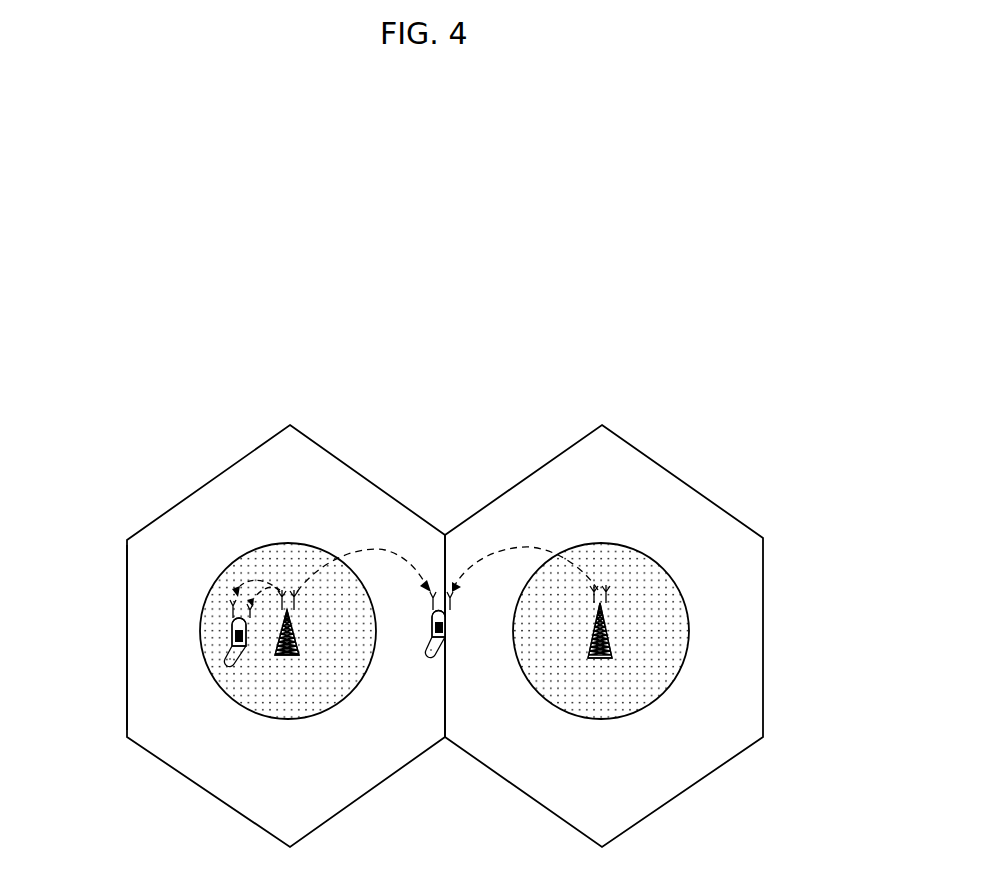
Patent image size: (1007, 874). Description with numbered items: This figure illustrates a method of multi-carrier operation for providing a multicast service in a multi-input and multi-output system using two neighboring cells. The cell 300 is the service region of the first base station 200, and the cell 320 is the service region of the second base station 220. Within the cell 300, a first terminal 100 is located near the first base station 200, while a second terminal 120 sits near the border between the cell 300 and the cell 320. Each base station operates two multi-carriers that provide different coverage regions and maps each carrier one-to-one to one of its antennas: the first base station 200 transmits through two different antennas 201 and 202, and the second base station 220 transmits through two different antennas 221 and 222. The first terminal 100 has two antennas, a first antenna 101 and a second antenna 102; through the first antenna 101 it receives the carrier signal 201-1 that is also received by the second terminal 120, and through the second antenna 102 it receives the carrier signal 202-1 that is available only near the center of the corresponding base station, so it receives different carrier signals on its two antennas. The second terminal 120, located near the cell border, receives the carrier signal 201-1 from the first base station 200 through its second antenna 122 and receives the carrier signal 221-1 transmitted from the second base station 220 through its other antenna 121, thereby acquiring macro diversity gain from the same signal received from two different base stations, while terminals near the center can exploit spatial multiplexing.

The first terminal 100 is at (224, 653).
The first antenna 101 is at (233, 615).
The second antenna 102 is at (250, 619).
The second terminal 120 is at (447, 643).
The antenna 121 is at (450, 611).
The second antenna 122 is at (432, 608).
The first base station 200 is at (284, 657).
The antenna 201 is at (299, 612).
The carrier signal 201-1 is at (313, 571).
The antenna 202 is at (268, 583).
The carrier signal 202-1 is at (245, 580).
The second base station 220 is at (613, 638).
The antenna 221 is at (607, 604).
The beam from second base station to second mobile station 221-1 is at (532, 549).
The antenna 222 is at (593, 604).
The cell 300 is at (208, 480).
The cell 320 is at (520, 481).